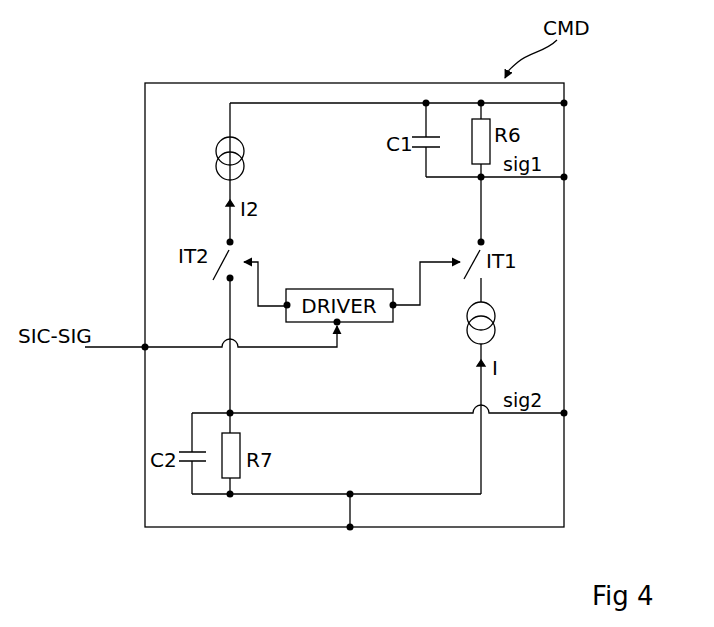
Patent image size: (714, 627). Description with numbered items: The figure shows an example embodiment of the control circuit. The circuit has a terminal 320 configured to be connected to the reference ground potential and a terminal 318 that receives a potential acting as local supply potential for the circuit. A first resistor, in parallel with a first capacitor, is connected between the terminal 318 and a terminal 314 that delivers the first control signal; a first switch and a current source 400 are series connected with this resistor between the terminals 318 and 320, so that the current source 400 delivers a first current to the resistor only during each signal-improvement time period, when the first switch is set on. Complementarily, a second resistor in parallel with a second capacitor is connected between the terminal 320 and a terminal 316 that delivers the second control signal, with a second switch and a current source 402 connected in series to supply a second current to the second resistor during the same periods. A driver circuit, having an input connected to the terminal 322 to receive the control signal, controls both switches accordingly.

The terminal 318 is at (568, 103).
The terminal 314 is at (568, 177).
The terminal 316 is at (568, 413).
The terminal 320 is at (350, 531).
The terminal 322 is at (148, 346).
The current source 400 is at (497, 325).
The current source 402 is at (215, 157).